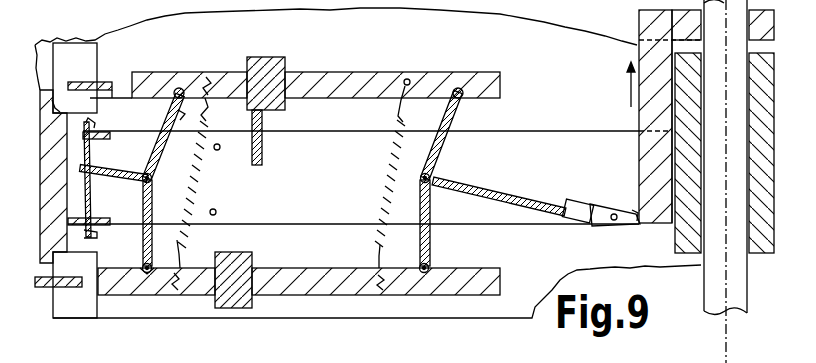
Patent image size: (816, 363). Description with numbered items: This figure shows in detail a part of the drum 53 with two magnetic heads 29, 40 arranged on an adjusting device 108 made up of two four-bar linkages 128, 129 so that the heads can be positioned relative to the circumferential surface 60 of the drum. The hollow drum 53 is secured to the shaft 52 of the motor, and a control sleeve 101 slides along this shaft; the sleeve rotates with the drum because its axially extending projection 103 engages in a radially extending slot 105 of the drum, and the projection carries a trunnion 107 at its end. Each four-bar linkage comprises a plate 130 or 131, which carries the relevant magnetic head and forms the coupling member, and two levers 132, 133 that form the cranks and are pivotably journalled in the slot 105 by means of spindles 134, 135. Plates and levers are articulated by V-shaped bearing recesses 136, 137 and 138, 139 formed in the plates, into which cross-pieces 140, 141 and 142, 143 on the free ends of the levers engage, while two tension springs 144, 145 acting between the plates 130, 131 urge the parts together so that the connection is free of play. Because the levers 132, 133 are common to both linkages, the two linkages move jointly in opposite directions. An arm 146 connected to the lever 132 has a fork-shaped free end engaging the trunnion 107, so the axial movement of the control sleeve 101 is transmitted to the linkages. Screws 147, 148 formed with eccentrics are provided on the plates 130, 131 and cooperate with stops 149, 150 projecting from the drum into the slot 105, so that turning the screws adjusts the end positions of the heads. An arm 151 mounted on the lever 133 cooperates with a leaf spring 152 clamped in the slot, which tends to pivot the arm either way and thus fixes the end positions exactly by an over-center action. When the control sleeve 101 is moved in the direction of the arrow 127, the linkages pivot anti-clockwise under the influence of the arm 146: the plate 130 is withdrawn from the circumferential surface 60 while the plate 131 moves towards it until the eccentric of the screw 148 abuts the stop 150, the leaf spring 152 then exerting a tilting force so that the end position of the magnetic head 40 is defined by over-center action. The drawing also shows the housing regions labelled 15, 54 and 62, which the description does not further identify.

The drive assembly 15 is at (519, 233).
The magnetic head 29 is at (43, 288).
The magnetic head 40 is at (104, 82).
The shaft 52 is at (704, 286).
The drum 53 is at (84, 57).
The bottom wall 54 is at (384, 316).
The circumferential surface 60 is at (51, 144).
The housing wall junction 62 is at (57, 110).
The control sleeve 101 is at (638, 31).
The projection 103 is at (647, 116).
The slot 105 is at (545, 130).
The trunnion 107 is at (632, 230).
The adjusting device 108 is at (558, 51).
The arrow 127 is at (627, 90).
The four-bar linkage 128 is at (286, 263).
The four-bar linkage 129 is at (298, 106).
The plate 130 is at (500, 278).
The plate 131 is at (355, 83).
The lever 132 is at (436, 165).
The lever 133 is at (183, 215).
The spindle 134 is at (430, 184).
The spindle 135 is at (142, 183).
The bearing recess 136 is at (429, 278).
The bearing recess 137 is at (148, 280).
The bearing recess 138 is at (459, 85).
The bearing recess 139 is at (173, 86).
The cross-piece 140 is at (431, 265).
The cross-piece 141 is at (140, 265).
The cross-piece 142 is at (463, 98).
The cross-piece 143 is at (170, 96).
The tension spring 144 is at (393, 177).
The tension spring 145 is at (212, 78).
The arm 146 is at (536, 197).
The screw 147 is at (254, 303).
The screw 148 is at (287, 56).
The stop 149 is at (220, 150).
The stop 150 is at (257, 147).
The arm 151 is at (95, 180).
The leaf spring 152 is at (90, 156).